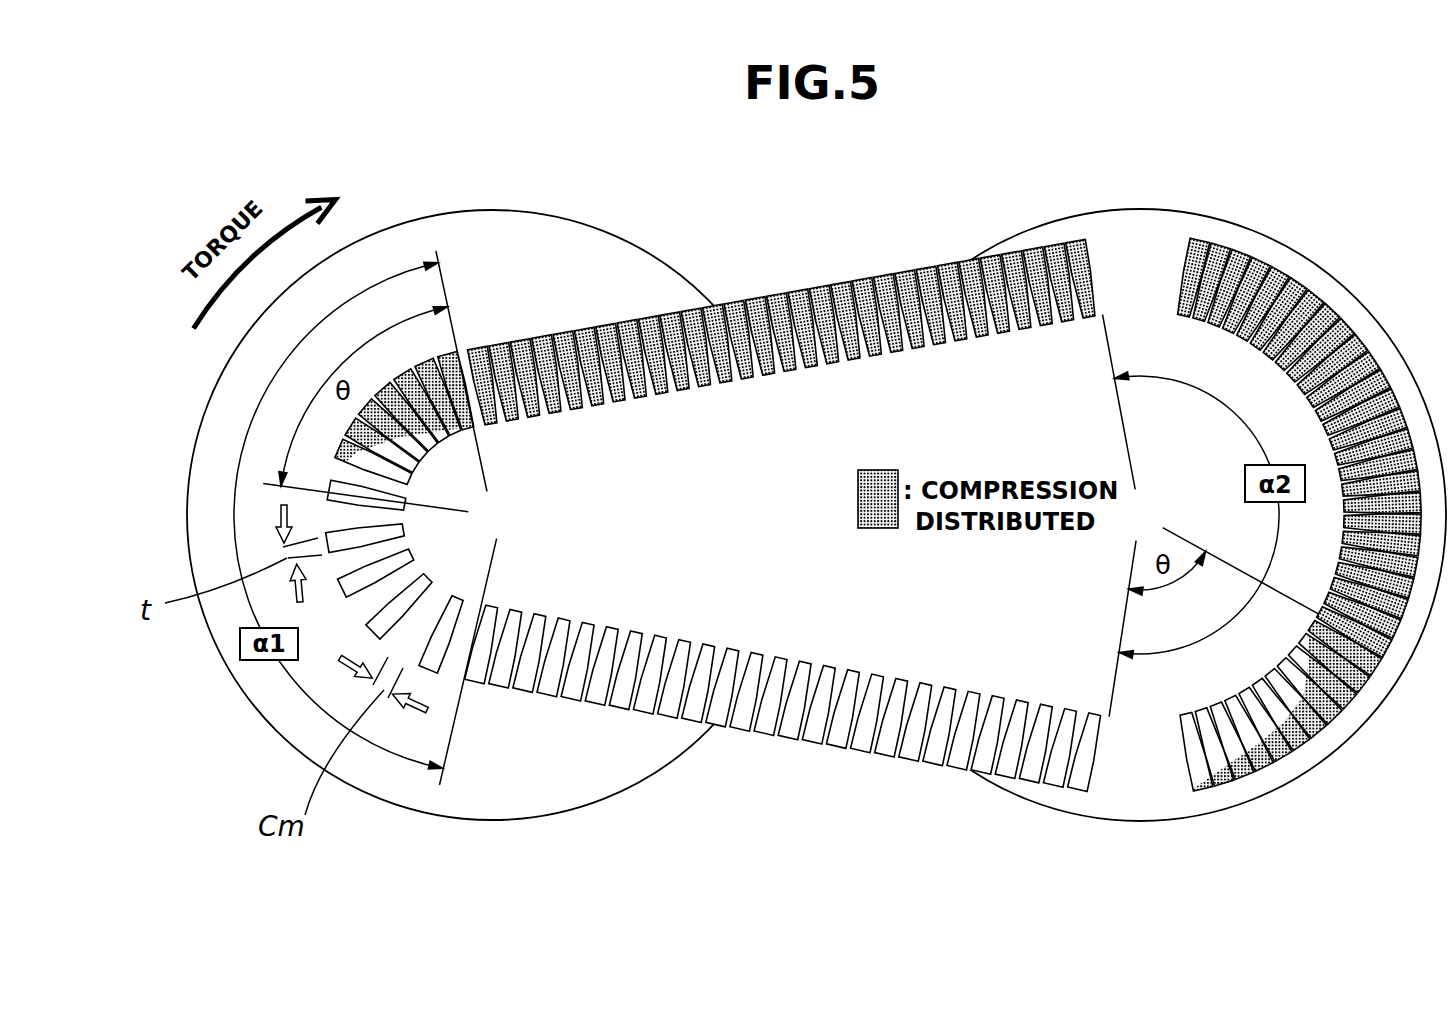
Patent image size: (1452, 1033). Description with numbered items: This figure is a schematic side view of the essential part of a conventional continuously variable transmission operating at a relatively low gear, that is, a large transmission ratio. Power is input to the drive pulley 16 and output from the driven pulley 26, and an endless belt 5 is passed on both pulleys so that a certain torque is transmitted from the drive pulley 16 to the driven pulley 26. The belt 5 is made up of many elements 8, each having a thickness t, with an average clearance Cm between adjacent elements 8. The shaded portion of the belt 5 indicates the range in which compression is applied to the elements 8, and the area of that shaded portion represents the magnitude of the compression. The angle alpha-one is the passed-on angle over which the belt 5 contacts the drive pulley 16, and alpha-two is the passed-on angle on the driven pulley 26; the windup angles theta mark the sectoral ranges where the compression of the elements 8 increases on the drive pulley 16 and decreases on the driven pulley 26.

The belt 5 is at (876, 508).
The element 8 is at (601, 626).
The drive pulley 16 is at (600, 803).
The driven pulley 26 is at (1247, 803).